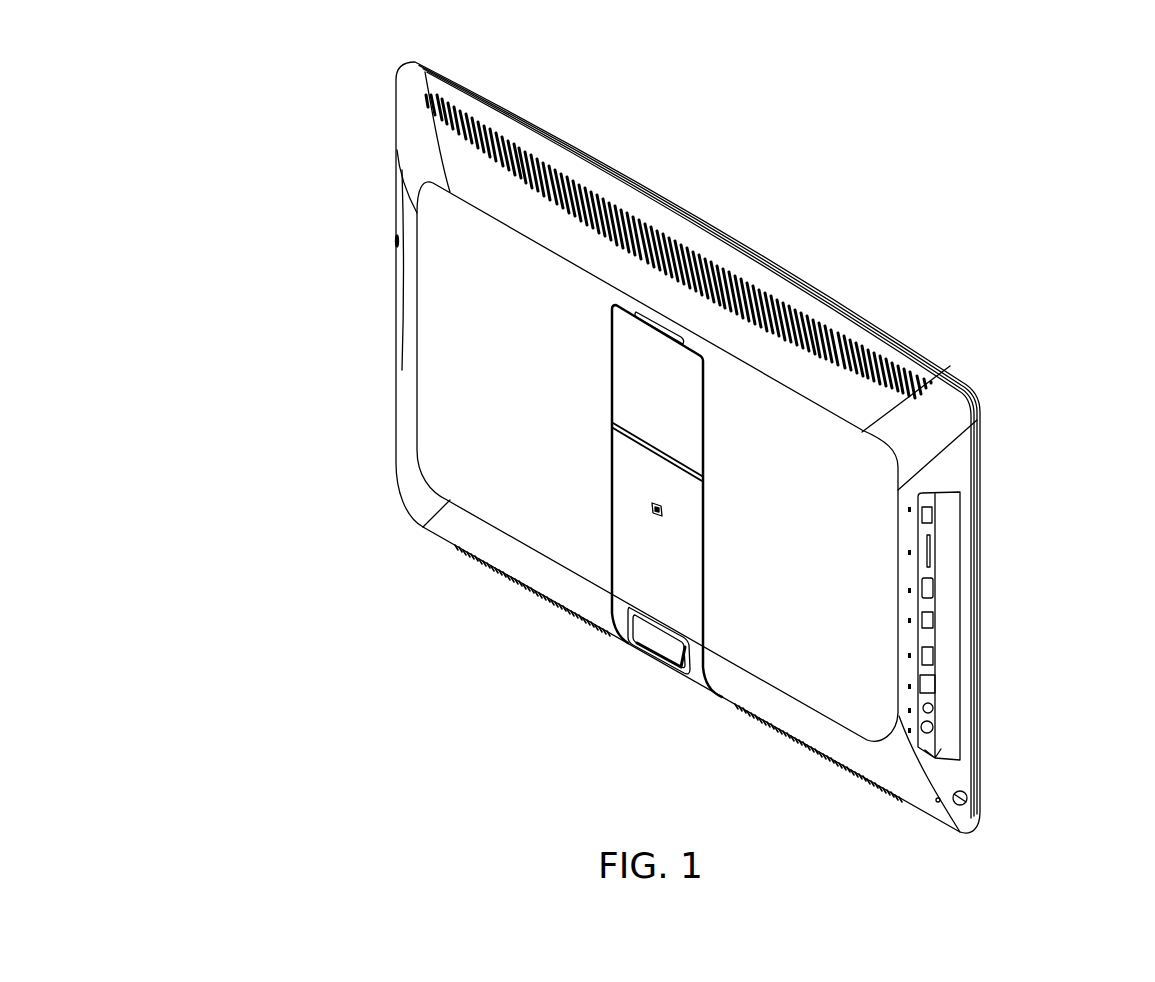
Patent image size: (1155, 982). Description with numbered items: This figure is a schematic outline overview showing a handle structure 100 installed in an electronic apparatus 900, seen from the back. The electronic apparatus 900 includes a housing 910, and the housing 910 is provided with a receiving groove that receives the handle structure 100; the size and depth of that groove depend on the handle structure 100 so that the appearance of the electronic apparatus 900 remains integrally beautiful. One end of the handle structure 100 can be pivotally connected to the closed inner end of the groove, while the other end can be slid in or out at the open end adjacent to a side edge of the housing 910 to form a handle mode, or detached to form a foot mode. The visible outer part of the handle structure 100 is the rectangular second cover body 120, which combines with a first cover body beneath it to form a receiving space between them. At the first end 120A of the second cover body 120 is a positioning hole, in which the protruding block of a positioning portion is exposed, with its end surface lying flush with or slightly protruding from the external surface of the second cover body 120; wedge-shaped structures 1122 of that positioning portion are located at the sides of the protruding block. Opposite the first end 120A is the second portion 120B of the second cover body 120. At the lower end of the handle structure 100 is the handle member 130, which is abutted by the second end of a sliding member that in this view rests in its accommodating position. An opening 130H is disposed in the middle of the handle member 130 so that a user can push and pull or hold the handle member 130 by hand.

The electronic apparatus 900 is at (362, 131).
The housing 910 is at (457, 405).
The handle structure 100 is at (751, 556).
The second cover body 120 is at (751, 501).
The first end of the second cover body 120A is at (628, 463).
The lower portion of stand 120B is at (683, 596).
The wedge-shaped structure 1122 is at (667, 508).
The handle member 130 is at (668, 708).
The opening 130H is at (665, 632).